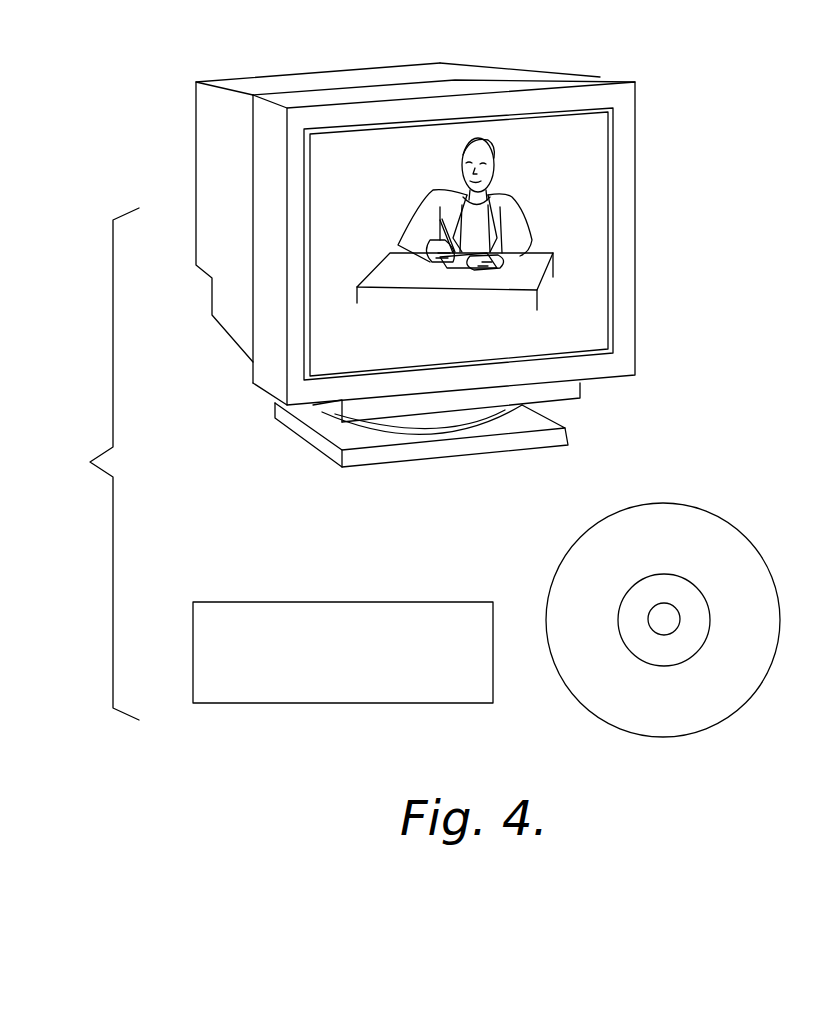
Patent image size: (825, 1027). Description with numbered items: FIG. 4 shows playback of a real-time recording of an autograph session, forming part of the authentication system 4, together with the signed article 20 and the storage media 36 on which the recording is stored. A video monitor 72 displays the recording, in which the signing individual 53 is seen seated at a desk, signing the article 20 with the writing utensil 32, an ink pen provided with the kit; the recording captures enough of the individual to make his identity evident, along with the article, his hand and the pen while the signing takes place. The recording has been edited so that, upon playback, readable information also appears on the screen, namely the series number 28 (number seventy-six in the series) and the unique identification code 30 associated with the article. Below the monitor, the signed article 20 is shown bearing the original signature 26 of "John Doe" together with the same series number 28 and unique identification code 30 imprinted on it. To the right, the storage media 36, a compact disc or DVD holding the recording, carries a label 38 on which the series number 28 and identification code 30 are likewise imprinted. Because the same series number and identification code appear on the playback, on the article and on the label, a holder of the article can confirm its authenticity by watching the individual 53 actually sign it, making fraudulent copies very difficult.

The authentication system 4 is at (69, 464).
The signed article 20 is at (442, 258).
The signature 26 is at (413, 693).
The series number 28 is at (343, 353).
The unique identification code 30 is at (575, 340).
The writing utensil 32 is at (447, 235).
The storage media 36 is at (723, 535).
The label 38 is at (690, 627).
The signer 53 is at (510, 190).
The video monitor 72 is at (600, 78).